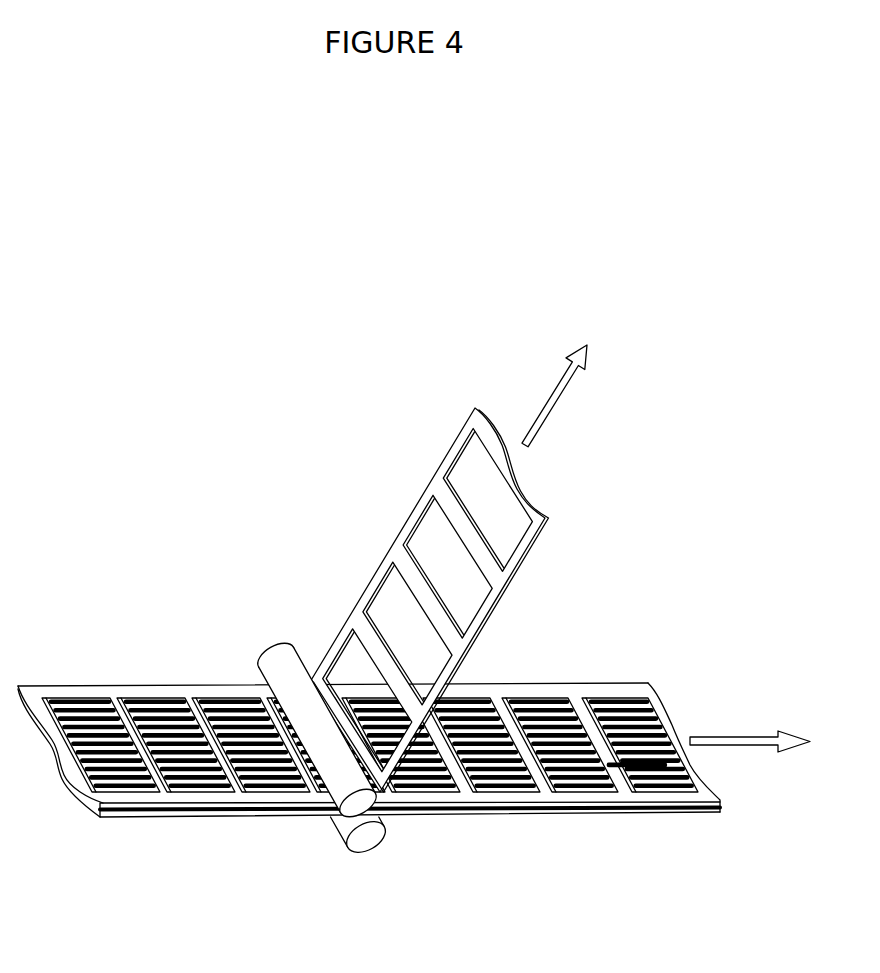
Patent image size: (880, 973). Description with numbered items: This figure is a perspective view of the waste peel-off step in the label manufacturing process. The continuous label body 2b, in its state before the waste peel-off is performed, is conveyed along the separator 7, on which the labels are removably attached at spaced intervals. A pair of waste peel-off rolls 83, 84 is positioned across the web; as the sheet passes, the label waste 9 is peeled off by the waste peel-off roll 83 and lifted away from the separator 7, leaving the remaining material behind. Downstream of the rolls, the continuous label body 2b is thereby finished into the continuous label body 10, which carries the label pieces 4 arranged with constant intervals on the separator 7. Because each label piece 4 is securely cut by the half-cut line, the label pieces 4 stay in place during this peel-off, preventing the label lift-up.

The continuous label body 2b is at (198, 652).
The label pieces 4 is at (547, 700).
The separator 7 is at (493, 692).
The label waste 9 is at (438, 482).
The continuous label body 10 is at (555, 747).
The waste peel-off roll 83 is at (272, 658).
The waste peel-off roll 84 is at (365, 843).